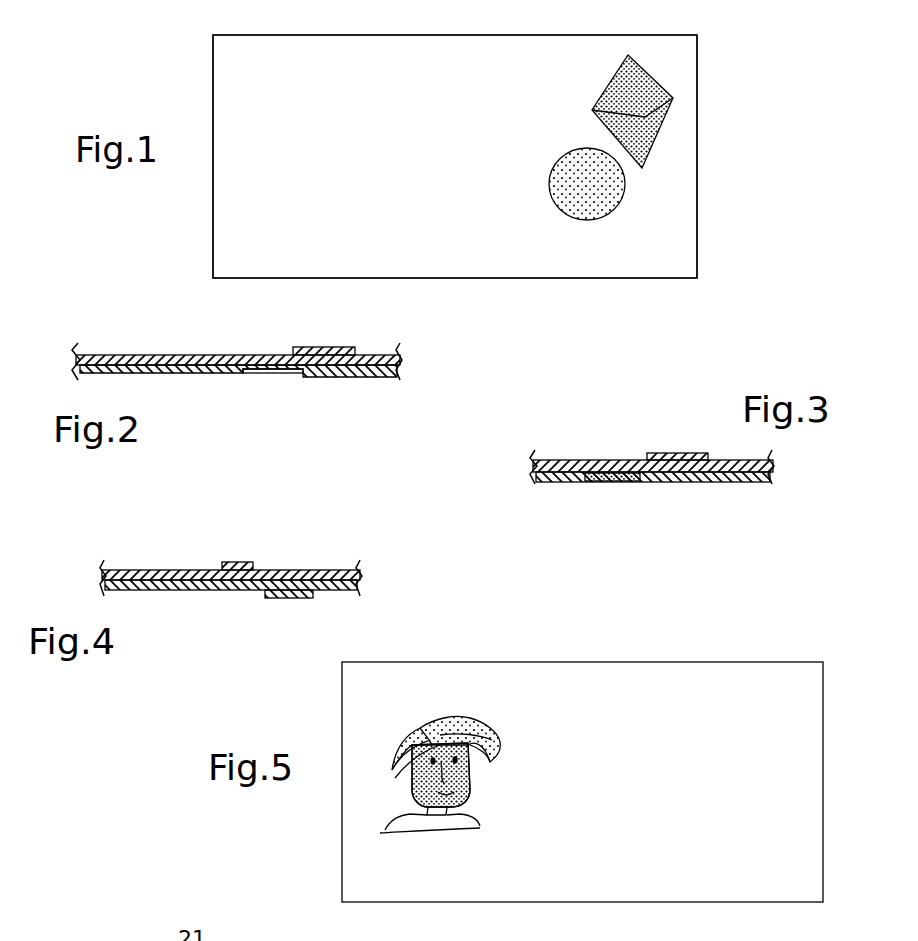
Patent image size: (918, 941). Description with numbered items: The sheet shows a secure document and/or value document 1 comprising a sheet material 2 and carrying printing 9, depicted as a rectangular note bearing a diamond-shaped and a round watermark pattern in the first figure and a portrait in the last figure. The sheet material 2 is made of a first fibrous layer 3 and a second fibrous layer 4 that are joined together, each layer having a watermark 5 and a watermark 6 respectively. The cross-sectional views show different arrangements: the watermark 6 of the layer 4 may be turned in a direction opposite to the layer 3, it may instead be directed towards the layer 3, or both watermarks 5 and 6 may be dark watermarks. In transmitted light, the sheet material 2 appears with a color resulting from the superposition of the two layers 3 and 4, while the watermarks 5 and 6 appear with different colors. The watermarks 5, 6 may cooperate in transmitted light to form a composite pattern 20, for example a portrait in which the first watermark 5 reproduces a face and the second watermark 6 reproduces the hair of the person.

In FIG. 1, the secure document and/or value document 1 is at (758, 92).
In FIG. 1, the sheet material 2 is at (224, 192).
In FIG. 5, the sheet material 2 is at (761, 680).
In FIG. 2, the first fibrous layer 3 is at (376, 372).
In FIG. 3, the first fibrous layer 3 is at (613, 460).
In FIG. 4, the first fibrous layer 3 is at (322, 570).
In FIG. 2, the second fibrous layer 4 is at (330, 378).
In FIG. 3, the second fibrous layer 4 is at (549, 482).
In FIG. 4, the second fibrous layer 4 is at (170, 585).
In FIG. 1, the first watermark 5 is at (561, 200).
In FIG. 2, the first watermark 5 is at (325, 347).
In FIG. 3, the first watermark 5 is at (688, 453).
In FIG. 4, the first watermark 5 is at (240, 562).
In FIG. 5, the first watermark 5 is at (410, 833).
In FIG. 1, the second watermark 6 is at (660, 130).
In FIG. 2, the second watermark 6 is at (271, 377).
In FIG. 3, the second watermark 6 is at (600, 482).
In FIG. 4, the second watermark 6 is at (286, 598).
In FIG. 5, the second watermark 6 is at (395, 745).
In FIG. 1, the printing 9 is at (222, 55).
In FIG. 5, the composite pattern 20 is at (386, 790).